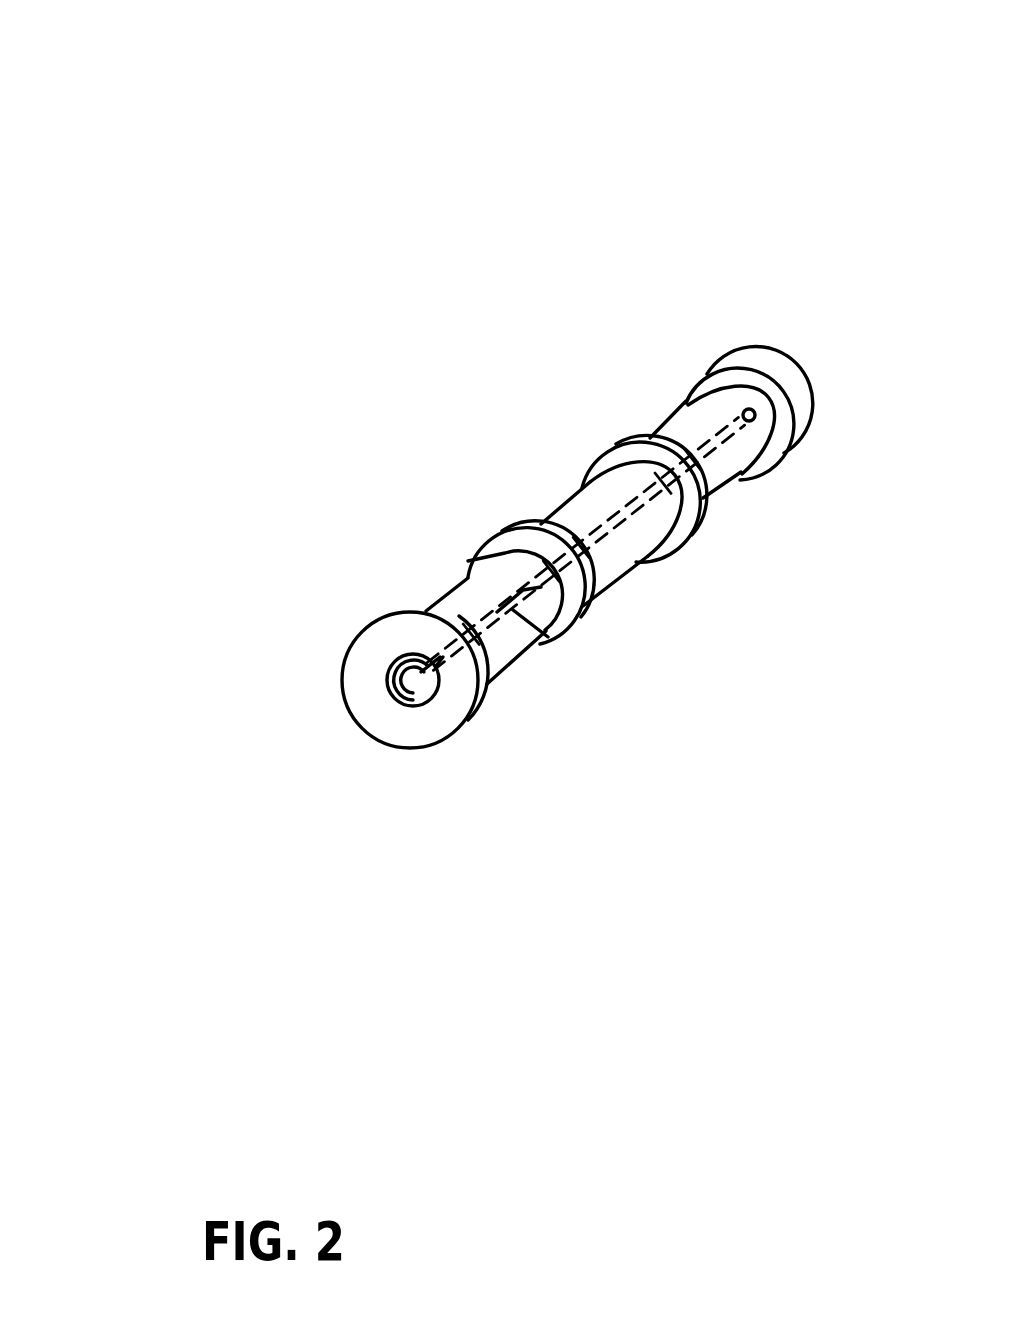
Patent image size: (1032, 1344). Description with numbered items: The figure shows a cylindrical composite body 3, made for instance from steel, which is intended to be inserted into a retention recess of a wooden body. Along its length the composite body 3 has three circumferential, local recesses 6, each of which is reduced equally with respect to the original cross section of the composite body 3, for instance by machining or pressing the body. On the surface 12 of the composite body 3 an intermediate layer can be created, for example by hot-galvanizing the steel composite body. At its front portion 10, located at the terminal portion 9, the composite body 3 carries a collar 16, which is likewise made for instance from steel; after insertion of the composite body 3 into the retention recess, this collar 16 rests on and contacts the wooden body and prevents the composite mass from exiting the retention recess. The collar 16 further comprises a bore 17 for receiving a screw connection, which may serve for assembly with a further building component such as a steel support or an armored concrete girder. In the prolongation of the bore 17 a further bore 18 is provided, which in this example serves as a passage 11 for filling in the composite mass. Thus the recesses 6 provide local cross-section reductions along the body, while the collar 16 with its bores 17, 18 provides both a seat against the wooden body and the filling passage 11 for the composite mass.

The composite body 3 is at (562, 248).
The recesses 6 is at (627, 433).
The terminal portion 9 is at (366, 600).
The front portion 10 is at (437, 782).
The passage 11 is at (505, 655).
The surface 12 is at (625, 574).
The collar 16 is at (362, 671).
The bore 17 is at (410, 704).
The bore 18 is at (548, 637).